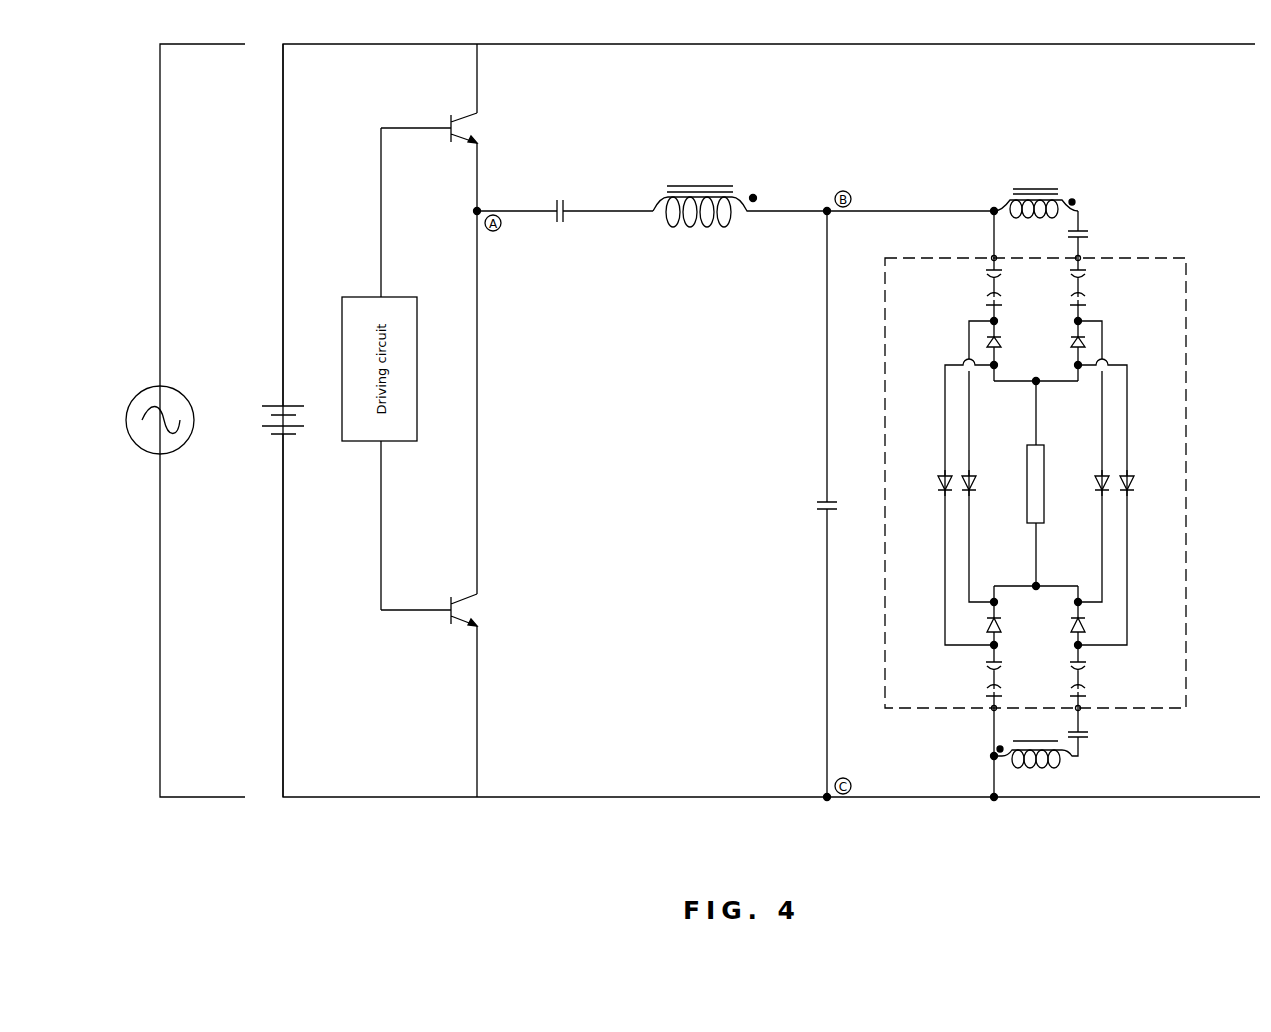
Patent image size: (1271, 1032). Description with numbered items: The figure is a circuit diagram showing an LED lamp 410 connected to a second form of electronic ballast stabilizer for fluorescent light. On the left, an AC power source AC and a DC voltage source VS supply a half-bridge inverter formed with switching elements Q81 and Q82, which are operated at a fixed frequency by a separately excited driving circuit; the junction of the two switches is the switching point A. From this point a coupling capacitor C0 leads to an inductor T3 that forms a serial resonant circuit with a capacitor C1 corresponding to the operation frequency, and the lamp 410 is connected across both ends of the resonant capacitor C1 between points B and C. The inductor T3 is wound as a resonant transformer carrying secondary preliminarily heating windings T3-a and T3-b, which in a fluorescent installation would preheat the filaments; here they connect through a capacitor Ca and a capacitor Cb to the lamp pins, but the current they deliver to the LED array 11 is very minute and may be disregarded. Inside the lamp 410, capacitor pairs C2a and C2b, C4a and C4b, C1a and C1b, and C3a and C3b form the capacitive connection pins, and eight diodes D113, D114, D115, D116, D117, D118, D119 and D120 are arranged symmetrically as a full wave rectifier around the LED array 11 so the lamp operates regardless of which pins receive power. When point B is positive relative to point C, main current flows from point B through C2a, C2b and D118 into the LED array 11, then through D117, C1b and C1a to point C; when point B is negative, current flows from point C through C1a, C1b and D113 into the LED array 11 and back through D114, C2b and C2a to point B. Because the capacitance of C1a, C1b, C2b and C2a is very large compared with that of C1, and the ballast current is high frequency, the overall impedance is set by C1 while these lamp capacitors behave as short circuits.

The LED array 11 is at (1027, 466).
The LED lamp 410 is at (1064, 461).
The AC power source AC is at (145, 420).
The DC voltage source VS is at (276, 420).
The switching element Q81 is at (452, 128).
The switching element Q82 is at (452, 610).
The coupling capacitor C0 is at (559, 201).
The inductor T3 is at (740, 196).
The capacitor C1 is at (839, 497).
The preliminarily heating winding T3-a is at (1036, 215).
The preliminarily heating winding T3-b is at (1036, 761).
The capacitor Ca is at (1090, 234).
The capacitor Cb is at (1090, 727).
The capacitor C1a is at (985, 693).
The capacitor C1b is at (985, 662).
The capacitor C2a is at (985, 273).
The capacitor C2b is at (985, 304).
The capacitor C3a is at (1084, 693).
The capacitor C3b is at (1084, 662).
The capacitor C4a is at (1084, 273).
The capacitor C4b is at (1084, 304).
The diode D113 is at (985, 615).
The diode D114 is at (985, 343).
The diode D115 is at (1069, 615).
The diode D116 is at (1069, 343).
The diode D117 is at (936, 485).
The diode D118 is at (976, 485).
The diode D119 is at (1093, 485).
The diode D120 is at (1134, 485).